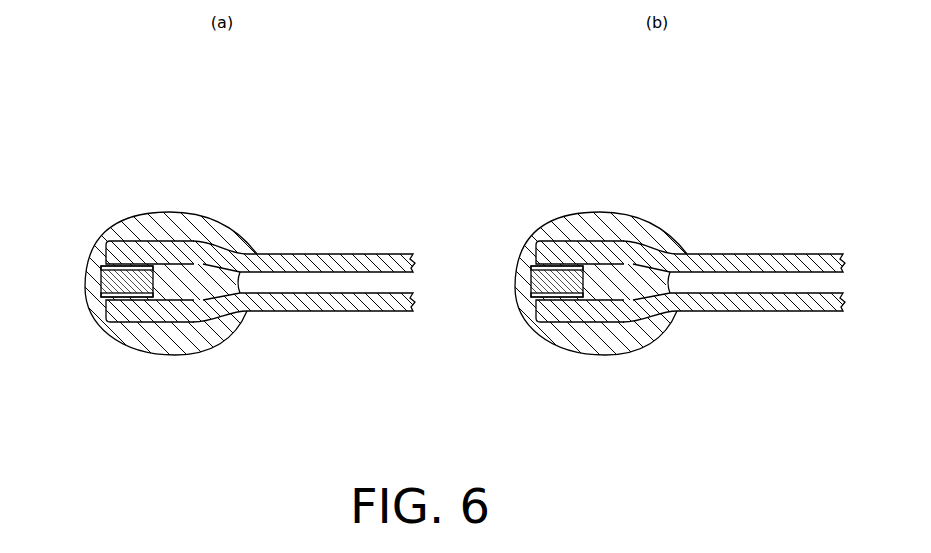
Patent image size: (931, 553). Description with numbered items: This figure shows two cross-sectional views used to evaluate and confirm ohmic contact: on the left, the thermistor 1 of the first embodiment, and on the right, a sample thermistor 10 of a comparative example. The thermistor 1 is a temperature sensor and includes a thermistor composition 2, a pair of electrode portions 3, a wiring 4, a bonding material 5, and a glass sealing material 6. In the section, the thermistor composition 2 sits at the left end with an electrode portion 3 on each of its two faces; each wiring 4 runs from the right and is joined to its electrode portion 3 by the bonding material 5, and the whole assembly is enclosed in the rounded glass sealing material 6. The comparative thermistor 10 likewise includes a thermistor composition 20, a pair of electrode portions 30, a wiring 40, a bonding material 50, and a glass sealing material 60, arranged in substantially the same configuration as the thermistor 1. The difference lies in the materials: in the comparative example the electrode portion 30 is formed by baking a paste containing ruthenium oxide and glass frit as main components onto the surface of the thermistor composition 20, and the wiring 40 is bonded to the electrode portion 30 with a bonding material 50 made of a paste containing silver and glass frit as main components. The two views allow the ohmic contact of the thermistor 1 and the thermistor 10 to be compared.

The thermistor 1 is at (197, 155).
The thermistor composition 2 is at (99, 274).
The electrode portions 3 is at (88, 255).
The wiring 4 is at (302, 253).
The bonding material 5 is at (120, 240).
The glass sealing material 6 is at (207, 230).
The thermistor 10 is at (637, 155).
The thermistor composition 20 is at (528, 287).
The electrode portions 30 is at (520, 257).
The wiring 40 is at (738, 257).
The bonding material 50 is at (563, 240).
The glass sealing material 60 is at (638, 223).